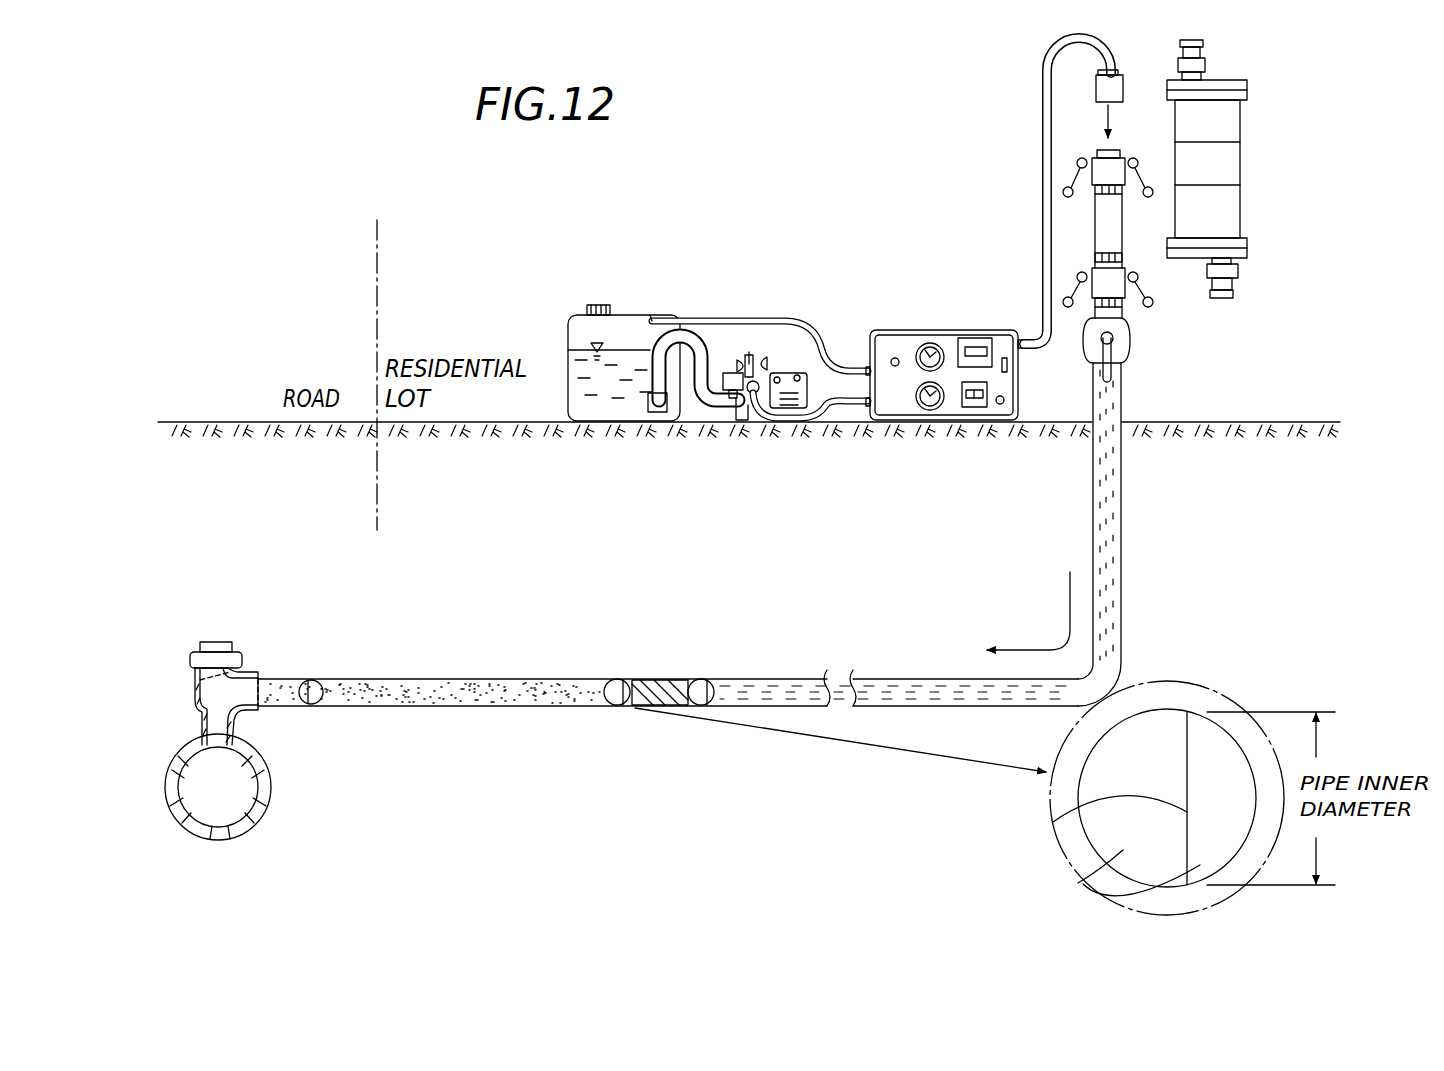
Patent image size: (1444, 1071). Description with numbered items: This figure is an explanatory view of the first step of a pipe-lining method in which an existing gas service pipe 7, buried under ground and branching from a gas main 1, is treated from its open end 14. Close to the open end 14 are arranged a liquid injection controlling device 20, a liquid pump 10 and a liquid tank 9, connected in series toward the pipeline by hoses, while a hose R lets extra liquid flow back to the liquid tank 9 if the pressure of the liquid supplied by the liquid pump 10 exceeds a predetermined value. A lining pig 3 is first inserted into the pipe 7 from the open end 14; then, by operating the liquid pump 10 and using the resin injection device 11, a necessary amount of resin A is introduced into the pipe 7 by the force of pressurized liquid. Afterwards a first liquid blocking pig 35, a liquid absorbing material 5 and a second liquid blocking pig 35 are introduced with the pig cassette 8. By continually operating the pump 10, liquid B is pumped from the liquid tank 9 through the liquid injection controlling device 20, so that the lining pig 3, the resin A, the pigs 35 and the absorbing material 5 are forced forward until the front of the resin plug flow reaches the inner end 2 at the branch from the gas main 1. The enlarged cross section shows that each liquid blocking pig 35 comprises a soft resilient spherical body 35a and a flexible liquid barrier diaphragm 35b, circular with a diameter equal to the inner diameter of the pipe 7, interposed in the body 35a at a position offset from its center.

The gas main 1 is at (266, 810).
The inner end 2 is at (250, 672).
The lining pig 3 is at (306, 700).
The liquid absorbing material 5 is at (655, 680).
The gas service pipe 7 is at (284, 678).
The pig cassette 8 is at (1113, 233).
The liquid tank 9 is at (572, 315).
The liquid pump 10 is at (740, 412).
The resin injection device 11 is at (1223, 118).
The open end 14 is at (1118, 372).
The liquid injection controlling device 20 is at (952, 330).
The liquid blocking pig 35 is at (700, 680).
The spherical body 35a is at (1083, 884).
The liquid barrier diaphragm 35b is at (1053, 822).
The resin A is at (433, 692).
The liquid B is at (1093, 555).
The hose R is at (800, 318).